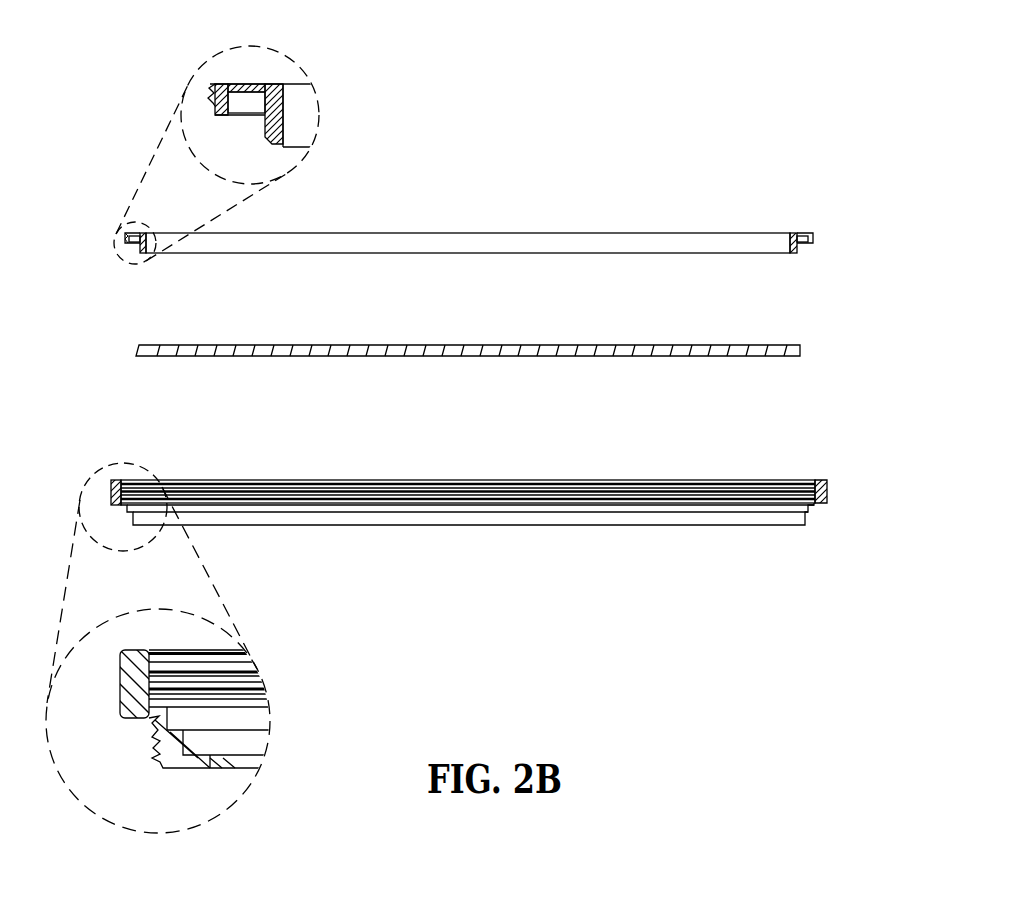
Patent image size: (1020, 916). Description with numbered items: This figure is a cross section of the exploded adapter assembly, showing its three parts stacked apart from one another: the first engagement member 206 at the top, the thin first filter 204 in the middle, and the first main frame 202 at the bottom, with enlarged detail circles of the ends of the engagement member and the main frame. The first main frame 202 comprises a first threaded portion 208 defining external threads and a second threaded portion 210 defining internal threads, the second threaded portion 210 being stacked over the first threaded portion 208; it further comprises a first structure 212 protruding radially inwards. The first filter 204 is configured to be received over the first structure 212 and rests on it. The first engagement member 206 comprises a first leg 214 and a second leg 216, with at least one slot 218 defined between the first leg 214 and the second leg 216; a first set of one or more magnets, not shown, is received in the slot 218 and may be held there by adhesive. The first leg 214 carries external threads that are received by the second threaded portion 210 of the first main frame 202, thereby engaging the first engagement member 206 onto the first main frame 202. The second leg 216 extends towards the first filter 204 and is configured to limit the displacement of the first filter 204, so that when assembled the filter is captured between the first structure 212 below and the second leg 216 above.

The first main frame 202 is at (441, 448).
The first filter 204 is at (508, 380).
The first engagement member 206 is at (429, 187).
The first threaded portion 208 is at (155, 725).
The second threaded portion 210 is at (238, 665).
The first structure 212 is at (225, 767).
The first leg 214 is at (172, 95).
The second leg 216 is at (286, 150).
The slot 218 is at (204, 52).